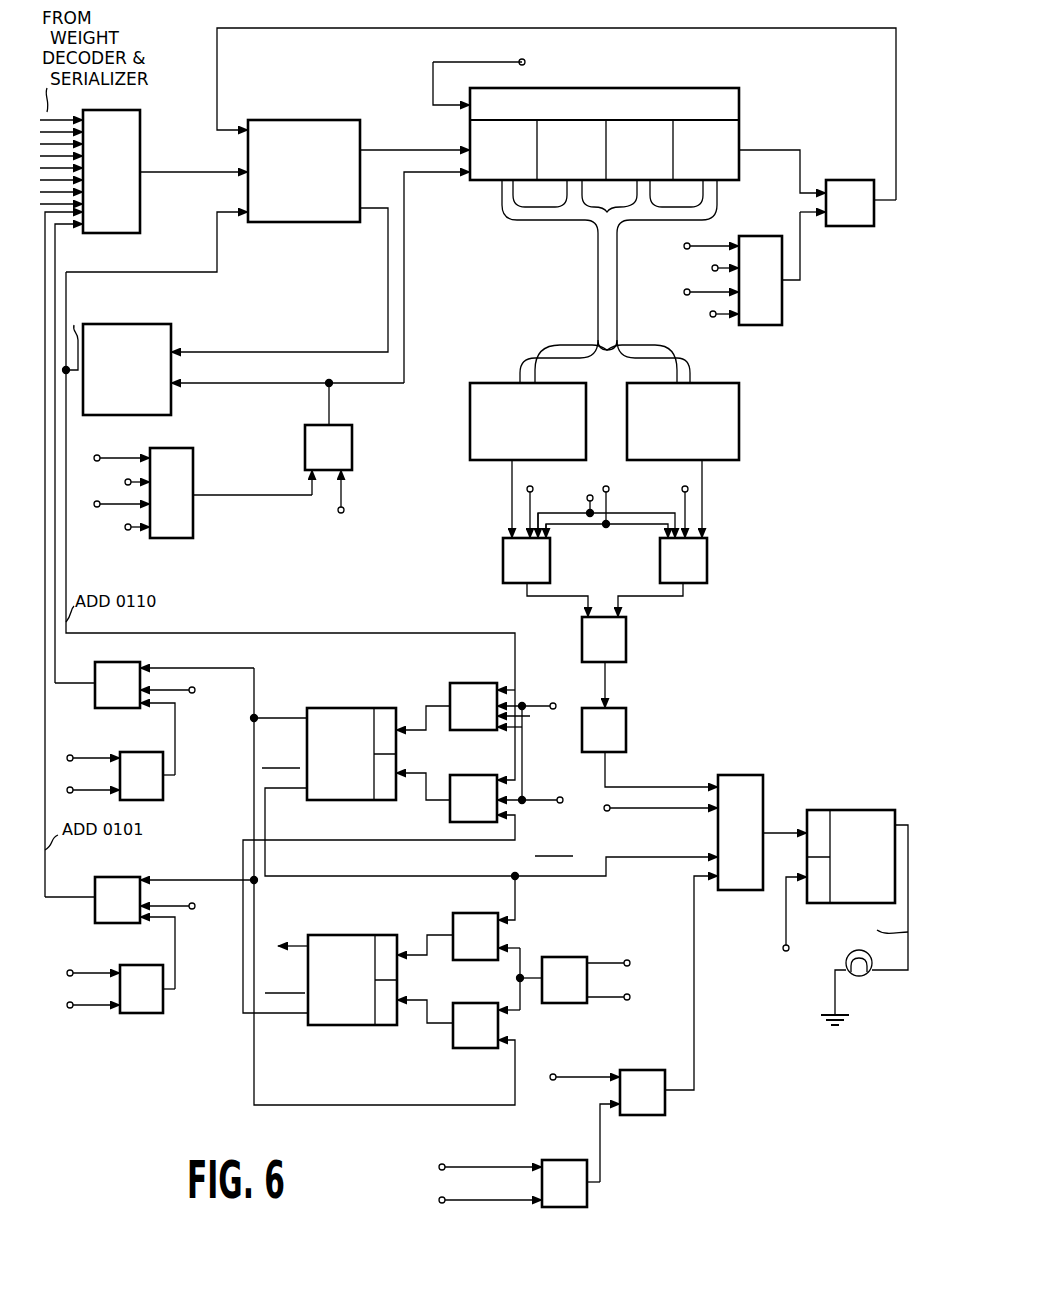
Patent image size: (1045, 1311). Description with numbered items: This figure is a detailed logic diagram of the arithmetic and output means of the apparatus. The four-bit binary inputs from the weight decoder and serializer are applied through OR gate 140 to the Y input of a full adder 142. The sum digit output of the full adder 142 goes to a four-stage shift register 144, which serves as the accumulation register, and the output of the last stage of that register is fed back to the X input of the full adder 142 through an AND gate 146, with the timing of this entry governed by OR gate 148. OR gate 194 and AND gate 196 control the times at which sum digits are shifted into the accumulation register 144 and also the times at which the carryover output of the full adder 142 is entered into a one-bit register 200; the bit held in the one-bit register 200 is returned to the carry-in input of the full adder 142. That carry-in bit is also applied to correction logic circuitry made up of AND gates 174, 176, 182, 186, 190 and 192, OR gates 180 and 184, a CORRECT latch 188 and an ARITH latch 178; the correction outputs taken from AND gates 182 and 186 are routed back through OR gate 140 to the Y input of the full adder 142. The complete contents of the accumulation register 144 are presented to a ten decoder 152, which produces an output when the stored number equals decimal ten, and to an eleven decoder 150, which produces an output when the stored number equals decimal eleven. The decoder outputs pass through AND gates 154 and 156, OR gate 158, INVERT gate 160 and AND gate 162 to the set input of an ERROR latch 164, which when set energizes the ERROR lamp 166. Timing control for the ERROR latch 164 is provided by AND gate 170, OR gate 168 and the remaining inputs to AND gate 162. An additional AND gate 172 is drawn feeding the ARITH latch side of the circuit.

The OR gate 140 is at (140, 128).
The full adder 142 is at (324, 118).
The 4-stage shift register 144 is at (628, 96).
The AND gate 146 is at (848, 179).
The OR gate 148 is at (782, 305).
The 11 decoder 150 is at (739, 420).
The ten decoder 152 is at (470, 420).
The AND gate 154 is at (707, 556).
The AND gate 156 is at (503, 556).
The OR gate 158 is at (626, 632).
The INVERT gate 160 is at (626, 718).
The AND gate 162 is at (722, 776).
The ERROR latch 164 is at (852, 808).
The ERROR lamp 166 is at (864, 976).
The OR gate 168 is at (655, 1115).
The AND gate 170 is at (587, 1196).
The AND gate 172 is at (556, 957).
The AND gate 174 is at (472, 1002).
The AND gate 176 is at (470, 912).
The ARITH latch 178 is at (364, 934).
The OR gate 180 is at (145, 1013).
The AND gate 182 is at (96, 922).
The OR gate 184 is at (152, 800).
The AND gate 186 is at (115, 662).
The CORRECT latch 188 is at (368, 708).
The AND gate 190 is at (488, 683).
The AND gate 192 is at (490, 774).
The OR gate 194 is at (193, 520).
The AND gate 196 is at (350, 425).
The 1-bit register 200 is at (145, 324).